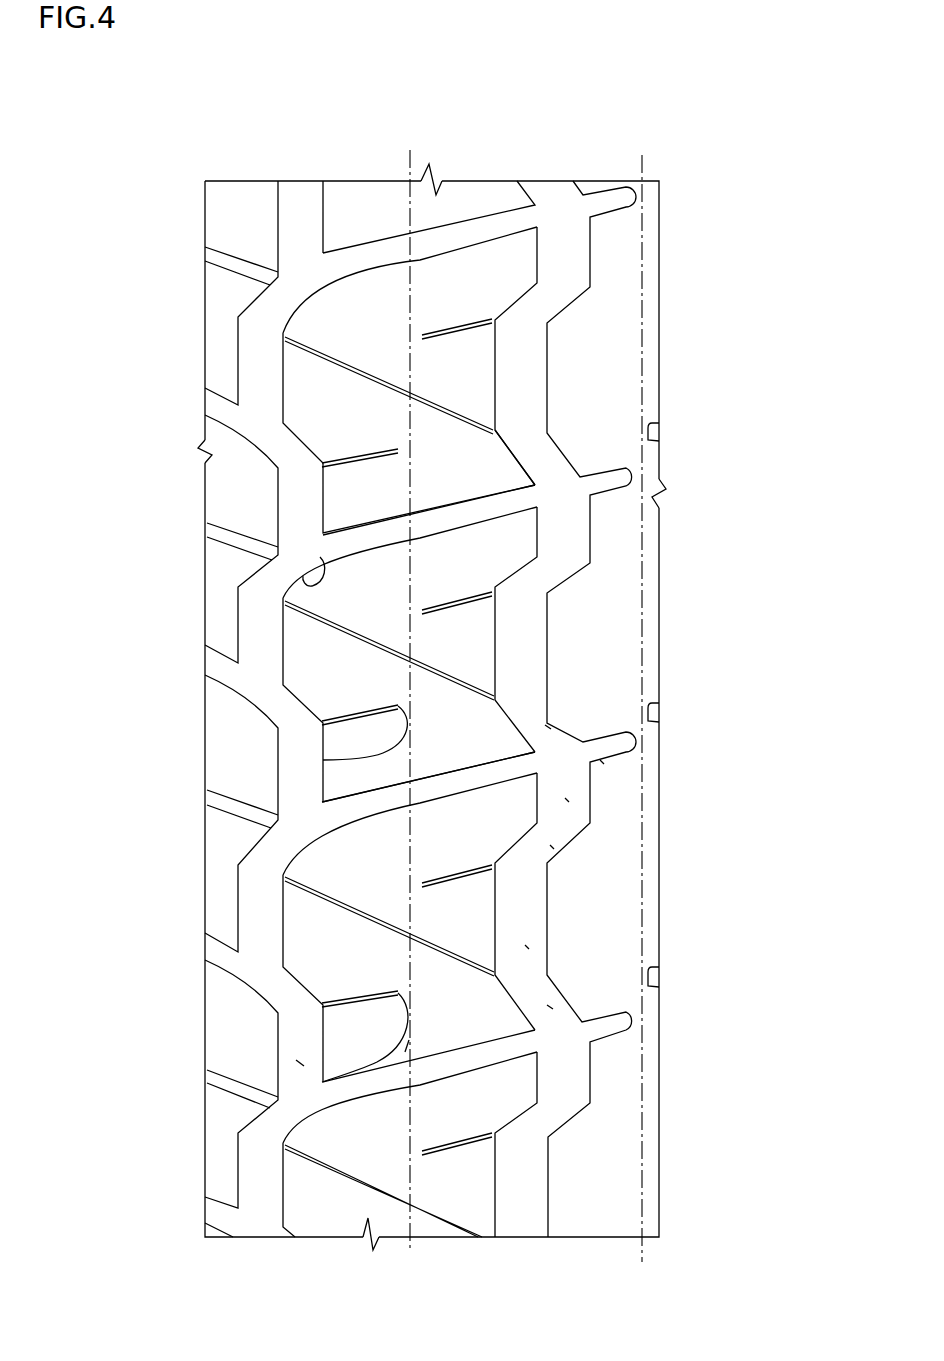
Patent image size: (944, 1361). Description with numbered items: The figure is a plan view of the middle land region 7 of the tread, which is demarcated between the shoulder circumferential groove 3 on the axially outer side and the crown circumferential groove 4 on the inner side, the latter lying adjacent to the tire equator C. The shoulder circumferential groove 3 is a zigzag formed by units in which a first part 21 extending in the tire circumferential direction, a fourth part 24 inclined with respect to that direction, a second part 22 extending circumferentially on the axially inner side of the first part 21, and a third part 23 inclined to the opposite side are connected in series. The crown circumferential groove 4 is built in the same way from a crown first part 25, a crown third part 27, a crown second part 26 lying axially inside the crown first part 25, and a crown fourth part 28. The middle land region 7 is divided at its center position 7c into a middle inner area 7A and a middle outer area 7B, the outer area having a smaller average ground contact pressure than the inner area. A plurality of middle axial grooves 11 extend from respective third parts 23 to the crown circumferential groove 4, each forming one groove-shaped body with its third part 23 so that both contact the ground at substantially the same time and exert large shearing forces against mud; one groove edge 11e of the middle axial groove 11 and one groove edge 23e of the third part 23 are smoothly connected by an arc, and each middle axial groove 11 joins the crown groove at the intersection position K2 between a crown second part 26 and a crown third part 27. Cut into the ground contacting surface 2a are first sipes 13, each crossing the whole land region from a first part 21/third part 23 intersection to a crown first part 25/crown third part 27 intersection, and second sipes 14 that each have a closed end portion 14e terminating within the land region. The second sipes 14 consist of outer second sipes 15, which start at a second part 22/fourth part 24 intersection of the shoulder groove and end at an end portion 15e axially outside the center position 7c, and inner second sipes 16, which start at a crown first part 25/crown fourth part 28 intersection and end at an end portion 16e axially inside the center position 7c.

The ground contacting surface 2a is at (340, 333).
The shoulder circumferential groove 3 is at (262, 1203).
The crown circumferential groove 4 is at (520, 1200).
The middle land region 7 is at (509, 143).
The middle inner area 7A is at (453, 1192).
The middle outer area 7B is at (342, 1203).
The center position 7c is at (405, 167).
The middle axial groove 11 is at (465, 512).
The groove edge of the middle axial groove 11e is at (488, 523).
The first sipe 13 is at (335, 624).
The second sipe 14 is at (397, 706).
The end portion of the second sipe 14e is at (323, 760).
The outer second sipe 15 is at (397, 993).
The end portion of the outer second sipe 15e is at (405, 1052).
The inner second sipe 16 is at (462, 878).
The end portion of the inner second sipe 16e is at (420, 888).
The first part 21 is at (262, 918).
The second part 22 is at (300, 1064).
The third part 23 is at (272, 583).
The groove edge of the third part 23e is at (320, 557).
The fourth part 24 is at (277, 985).
The crown first part 25 is at (527, 947).
The crown second part 26 is at (567, 800).
The crown third part 27 is at (548, 727).
The crown fourth part 28 is at (552, 847).
The intersection position K2 is at (607, 770).
The tire equator C is at (640, 696).